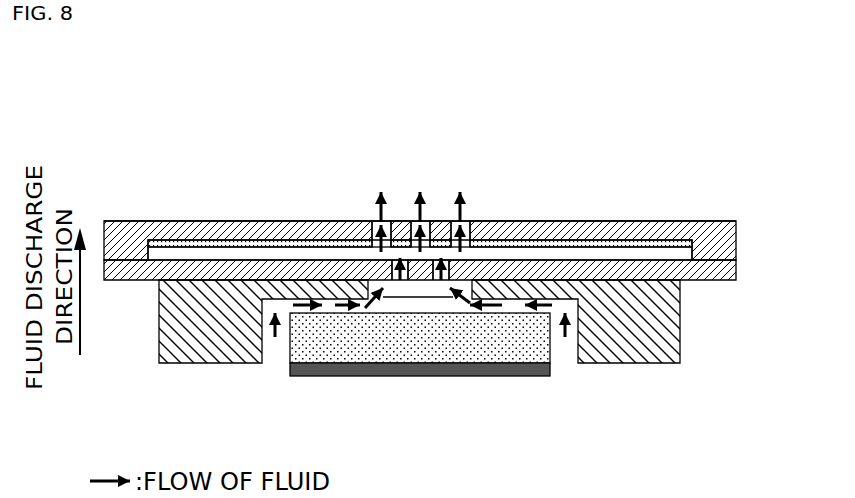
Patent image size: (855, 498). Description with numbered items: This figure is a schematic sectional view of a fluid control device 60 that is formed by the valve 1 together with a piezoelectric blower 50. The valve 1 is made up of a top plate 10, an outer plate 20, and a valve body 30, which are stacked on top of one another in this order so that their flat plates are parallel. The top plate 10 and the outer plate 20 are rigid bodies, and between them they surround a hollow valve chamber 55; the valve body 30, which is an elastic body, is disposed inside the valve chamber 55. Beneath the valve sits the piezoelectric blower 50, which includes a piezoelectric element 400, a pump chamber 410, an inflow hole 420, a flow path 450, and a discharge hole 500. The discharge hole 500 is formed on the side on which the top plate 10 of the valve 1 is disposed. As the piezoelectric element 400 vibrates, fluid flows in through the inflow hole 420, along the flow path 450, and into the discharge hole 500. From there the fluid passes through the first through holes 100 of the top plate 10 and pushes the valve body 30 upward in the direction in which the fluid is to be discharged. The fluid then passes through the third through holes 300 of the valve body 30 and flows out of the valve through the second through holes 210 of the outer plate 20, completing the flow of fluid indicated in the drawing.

The valve 1 is at (788, 218).
The top plate 10 is at (710, 276).
The outer plate 20 is at (720, 236).
The valve body 30 is at (692, 243).
The valve chamber 55 is at (292, 253).
The fluid control device 60 is at (726, 115).
The first through holes 100 is at (396, 290).
The second through holes 210 is at (465, 222).
The third through holes 300 is at (367, 232).
The piezoelectric element 400 is at (511, 366).
The pump chamber 410 is at (350, 350).
The inflow hole 420 is at (281, 364).
The flow path 450 is at (555, 342).
The discharge hole 500 is at (423, 297).
The piezoelectric blower 50 is at (685, 280).